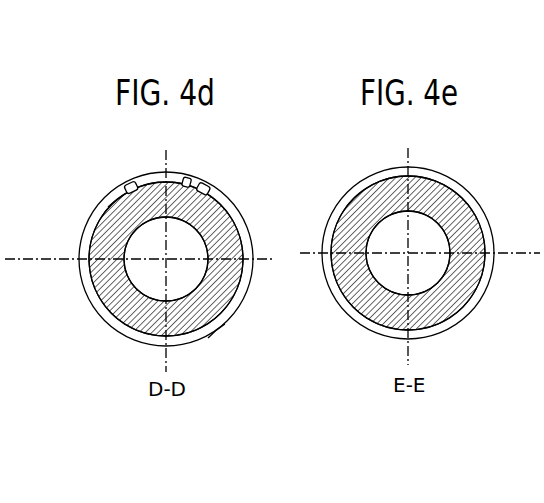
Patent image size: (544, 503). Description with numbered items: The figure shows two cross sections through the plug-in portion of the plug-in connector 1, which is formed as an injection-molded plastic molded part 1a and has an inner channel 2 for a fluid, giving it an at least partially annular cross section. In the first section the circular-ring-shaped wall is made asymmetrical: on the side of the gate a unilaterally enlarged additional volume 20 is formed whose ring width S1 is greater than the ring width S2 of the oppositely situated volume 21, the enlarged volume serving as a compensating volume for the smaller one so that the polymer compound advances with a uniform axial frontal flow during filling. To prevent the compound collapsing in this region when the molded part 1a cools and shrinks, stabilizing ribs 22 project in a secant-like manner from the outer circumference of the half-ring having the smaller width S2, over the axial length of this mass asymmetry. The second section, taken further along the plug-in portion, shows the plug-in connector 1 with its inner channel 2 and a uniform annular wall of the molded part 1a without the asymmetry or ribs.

In FIG. 4D, the plug-in connector 1 is at (156, 270).
In FIG. 4E, the plug-in connector 1 is at (386, 282).
In FIG. 4D, the molded part 1a is at (104, 322).
In FIG. 4E, the molded part 1a is at (350, 305).
In FIG. 4D, the inner channel 2 is at (188, 252).
In FIG. 4E, the inner channel 2 is at (430, 246).
In FIG. 4D, the enlarged additional volume 20 is at (238, 311).
In FIG. 4D, the oppositely situated volume 21 is at (187, 180).
In FIG. 4D, the stabilizing ribs 22 is at (127, 180).
In FIG. 4D, the ring width of the enlarged additional volume S1 is at (211, 336).
In FIG. 4D, the ring width of the oppositely situated volume S2 is at (115, 200).